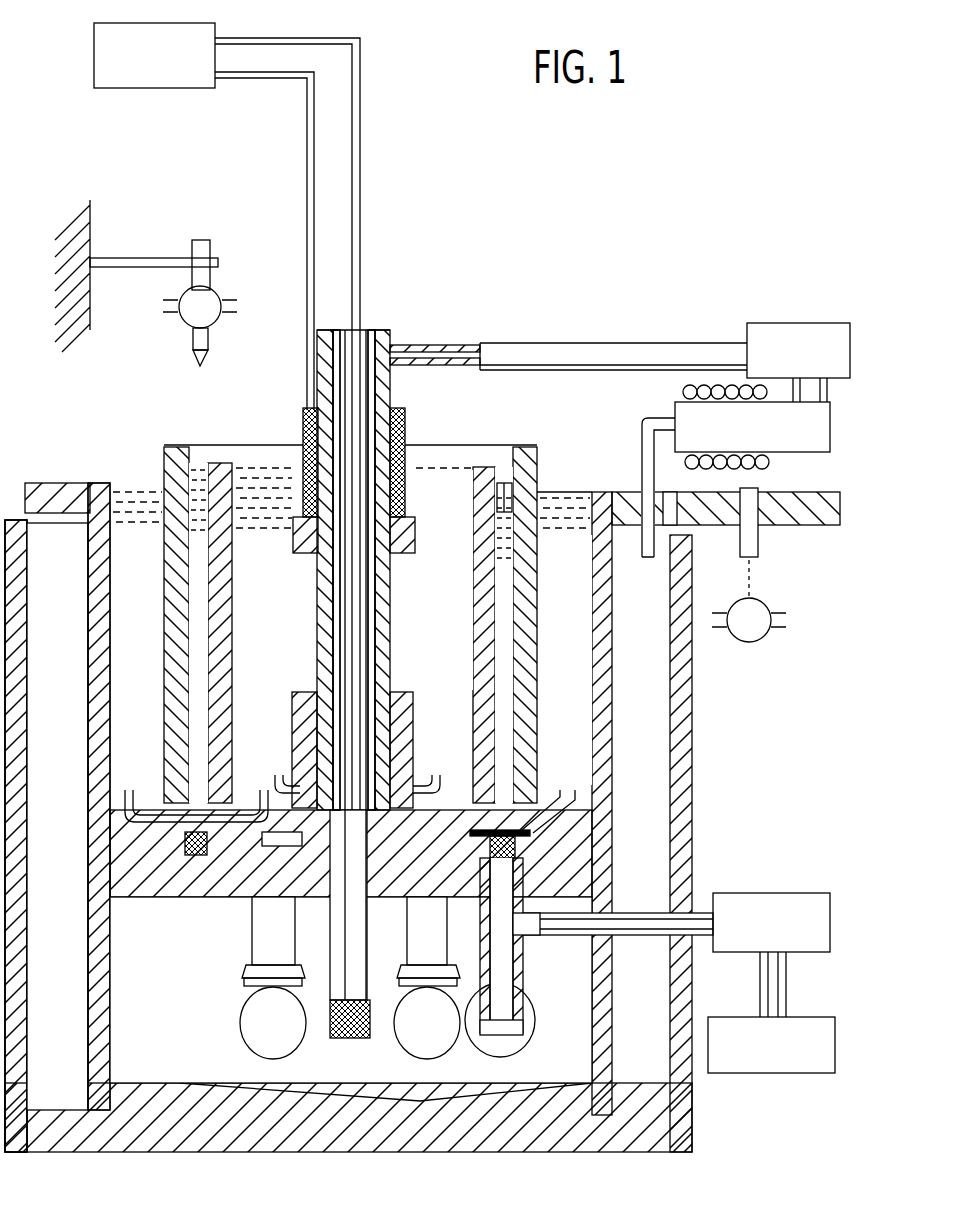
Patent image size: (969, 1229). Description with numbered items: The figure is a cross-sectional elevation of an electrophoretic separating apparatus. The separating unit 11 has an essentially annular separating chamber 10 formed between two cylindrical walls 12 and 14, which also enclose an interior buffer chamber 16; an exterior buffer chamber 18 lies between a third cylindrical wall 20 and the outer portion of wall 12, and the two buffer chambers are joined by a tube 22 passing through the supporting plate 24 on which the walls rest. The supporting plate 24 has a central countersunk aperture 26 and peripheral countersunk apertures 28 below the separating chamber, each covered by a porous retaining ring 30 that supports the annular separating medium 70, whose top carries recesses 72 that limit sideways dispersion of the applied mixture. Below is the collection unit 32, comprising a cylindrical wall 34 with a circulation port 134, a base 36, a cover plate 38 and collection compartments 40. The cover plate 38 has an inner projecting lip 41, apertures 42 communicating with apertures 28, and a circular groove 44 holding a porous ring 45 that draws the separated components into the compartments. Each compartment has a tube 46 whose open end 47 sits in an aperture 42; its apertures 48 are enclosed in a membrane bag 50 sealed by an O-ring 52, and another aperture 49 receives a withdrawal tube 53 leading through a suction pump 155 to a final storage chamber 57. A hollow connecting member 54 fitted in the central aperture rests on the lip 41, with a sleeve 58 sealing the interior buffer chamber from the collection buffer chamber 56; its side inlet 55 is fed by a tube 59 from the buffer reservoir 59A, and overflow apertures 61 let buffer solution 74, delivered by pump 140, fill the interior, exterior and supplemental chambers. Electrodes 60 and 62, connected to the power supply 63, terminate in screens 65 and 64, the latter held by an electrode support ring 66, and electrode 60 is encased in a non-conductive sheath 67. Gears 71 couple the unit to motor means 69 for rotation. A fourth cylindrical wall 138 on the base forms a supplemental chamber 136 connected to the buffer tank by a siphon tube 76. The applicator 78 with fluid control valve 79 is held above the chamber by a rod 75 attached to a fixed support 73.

The separating chamber 10 is at (189, 682).
The separating unit 11 is at (70, 431).
The cylindrical wall 12 is at (164, 643).
The cylindrical wall 14 is at (232, 691).
The interior buffer chamber 16 is at (428, 663).
The exterior buffer chamber 18 is at (553, 626).
The third cylindrical wall 20 is at (90, 552).
The tube 22 is at (135, 790).
The supporting plate 24 is at (98, 836).
The central countersunk aperture 26 is at (290, 789).
The countersunk apertures 28 is at (455, 800).
The porous retaining ring 30 is at (545, 801).
The collection unit 32 is at (80, 976).
The cylindrical wall 34 is at (86, 1014).
The base 36 is at (95, 1152).
The cover plate 38 is at (90, 845).
The collection compartments 40 is at (375, 971).
The inner projecting lip 41 is at (312, 846).
The apertures 42 is at (485, 900).
The circular groove 44 is at (480, 840).
The ring 45 is at (195, 857).
The tube 46 is at (252, 917).
The open end 47 is at (516, 855).
The apertures 48 is at (478, 1036).
The aperture 49 is at (526, 932).
The membrane bag 50 is at (250, 1048).
The O-ring 52 is at (243, 976).
The withdrawal tube 53 is at (625, 912).
The hollow connecting member 54 is at (315, 639).
The side inlet 55 is at (398, 348).
The collection buffer chamber 56 is at (121, 1049).
The final storage chamber 57 is at (760, 1074).
The sleeve 58 is at (413, 732).
The tube 59 is at (530, 343).
The buffer reservoir 59A is at (790, 455).
The electrode 60 is at (298, 36).
The overflow apertures 61 is at (330, 383).
The electrode 62 is at (292, 78).
The power supply 63 is at (160, 86).
The screen 64 is at (304, 421).
The screen 65 is at (340, 1041).
The electrode support ring 66 is at (407, 554).
The electrically non-conductive sheath 67 is at (372, 330).
The motor means 69 is at (762, 640).
The separating medium 70 is at (200, 527).
The gears 71 is at (50, 483).
The recesses 72 is at (522, 463).
The fixed support 73 is at (70, 226).
The buffer solution 74 is at (135, 506).
The rod 75 is at (133, 258).
The siphon or pump tube 76 is at (648, 560).
The applicator 78 is at (212, 250).
The fluid control valve 79 is at (180, 321).
The circulation port 134 is at (88, 1052).
The supplemental chamber 136 is at (44, 654).
The fourth cylindrical wall 138 is at (28, 720).
The pump 140 is at (756, 323).
The suction pump 155 is at (755, 893).